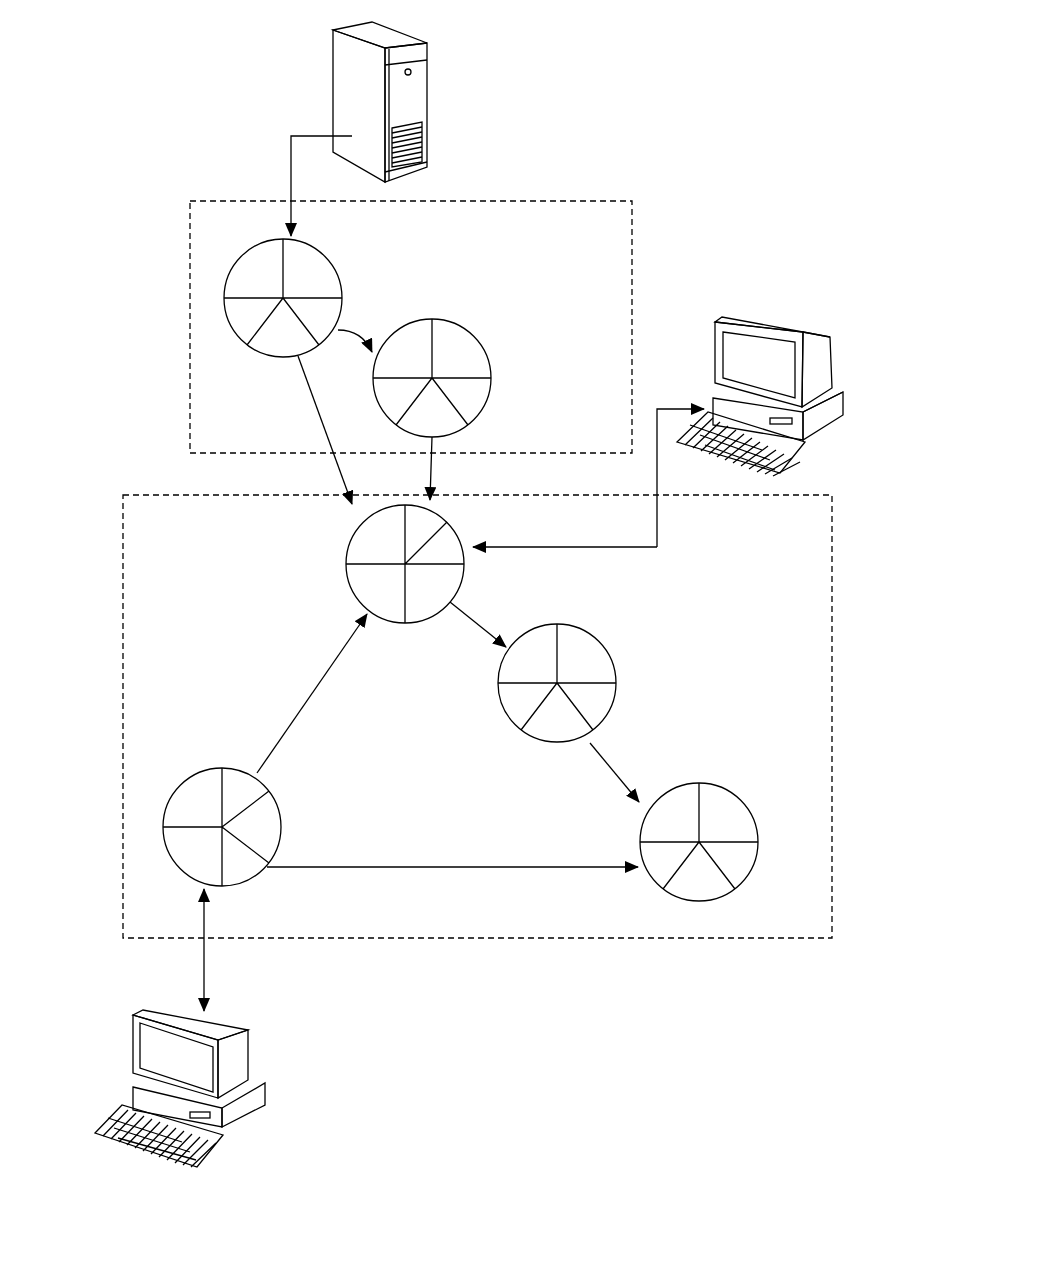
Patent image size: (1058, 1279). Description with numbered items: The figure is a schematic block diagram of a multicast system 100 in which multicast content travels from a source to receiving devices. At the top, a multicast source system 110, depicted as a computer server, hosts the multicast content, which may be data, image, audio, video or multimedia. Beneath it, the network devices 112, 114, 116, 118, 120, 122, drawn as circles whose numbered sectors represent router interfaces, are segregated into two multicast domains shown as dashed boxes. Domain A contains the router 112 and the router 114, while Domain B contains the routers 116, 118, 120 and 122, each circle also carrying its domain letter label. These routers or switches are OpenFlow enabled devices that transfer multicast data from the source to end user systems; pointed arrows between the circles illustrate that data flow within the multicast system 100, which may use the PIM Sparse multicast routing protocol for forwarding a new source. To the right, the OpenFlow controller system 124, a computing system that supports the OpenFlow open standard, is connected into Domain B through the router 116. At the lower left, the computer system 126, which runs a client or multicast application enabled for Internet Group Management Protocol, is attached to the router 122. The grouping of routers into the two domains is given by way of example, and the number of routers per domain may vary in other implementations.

The multicast system 100 is at (730, 23).
The multicast source system 110 is at (342, 93).
The network device 112 is at (346, 290).
The network device 114 is at (498, 381).
The network device 116 is at (346, 556).
The network device 118 is at (607, 640).
The network device 120 is at (752, 877).
The network device 122 is at (178, 868).
The OpenFlow controller system 124 is at (773, 325).
The computer system 126 is at (245, 1038).